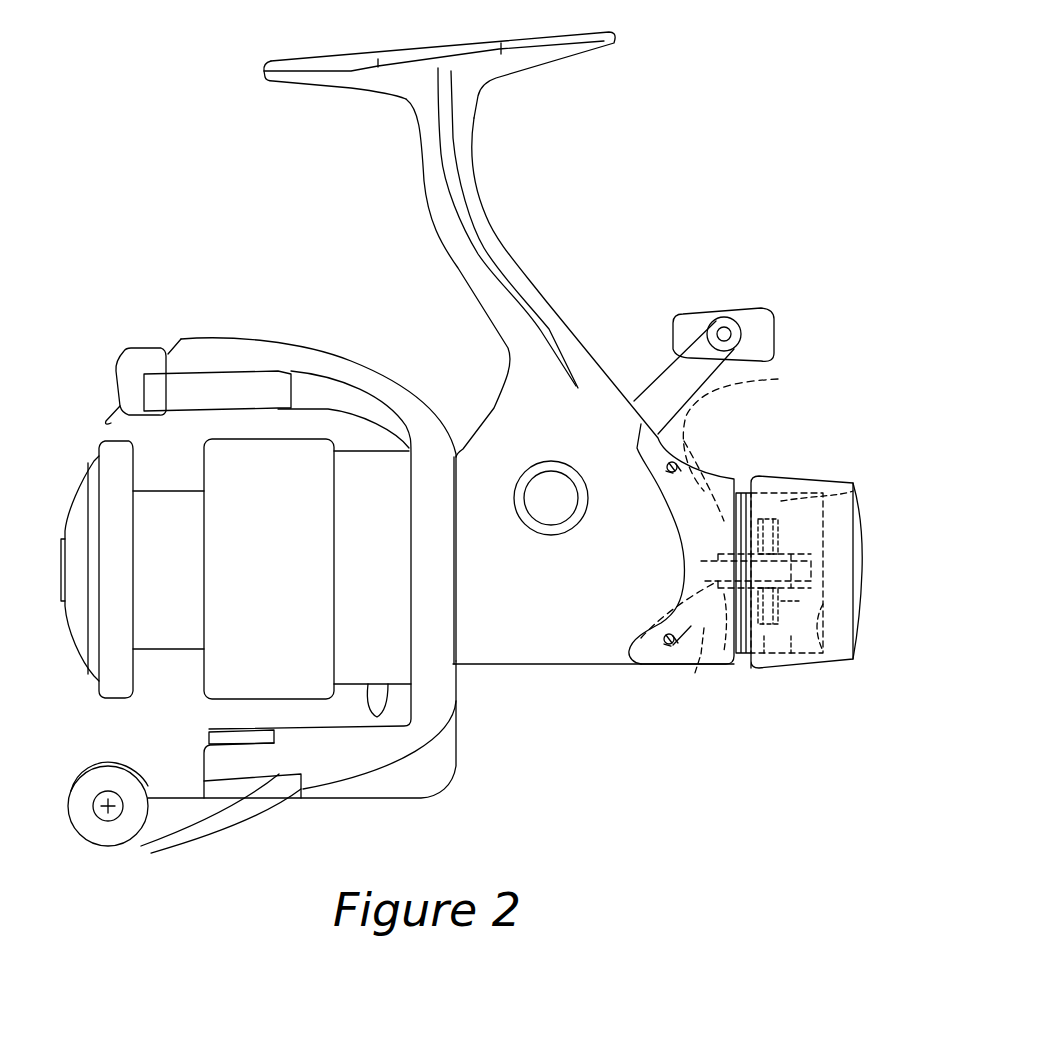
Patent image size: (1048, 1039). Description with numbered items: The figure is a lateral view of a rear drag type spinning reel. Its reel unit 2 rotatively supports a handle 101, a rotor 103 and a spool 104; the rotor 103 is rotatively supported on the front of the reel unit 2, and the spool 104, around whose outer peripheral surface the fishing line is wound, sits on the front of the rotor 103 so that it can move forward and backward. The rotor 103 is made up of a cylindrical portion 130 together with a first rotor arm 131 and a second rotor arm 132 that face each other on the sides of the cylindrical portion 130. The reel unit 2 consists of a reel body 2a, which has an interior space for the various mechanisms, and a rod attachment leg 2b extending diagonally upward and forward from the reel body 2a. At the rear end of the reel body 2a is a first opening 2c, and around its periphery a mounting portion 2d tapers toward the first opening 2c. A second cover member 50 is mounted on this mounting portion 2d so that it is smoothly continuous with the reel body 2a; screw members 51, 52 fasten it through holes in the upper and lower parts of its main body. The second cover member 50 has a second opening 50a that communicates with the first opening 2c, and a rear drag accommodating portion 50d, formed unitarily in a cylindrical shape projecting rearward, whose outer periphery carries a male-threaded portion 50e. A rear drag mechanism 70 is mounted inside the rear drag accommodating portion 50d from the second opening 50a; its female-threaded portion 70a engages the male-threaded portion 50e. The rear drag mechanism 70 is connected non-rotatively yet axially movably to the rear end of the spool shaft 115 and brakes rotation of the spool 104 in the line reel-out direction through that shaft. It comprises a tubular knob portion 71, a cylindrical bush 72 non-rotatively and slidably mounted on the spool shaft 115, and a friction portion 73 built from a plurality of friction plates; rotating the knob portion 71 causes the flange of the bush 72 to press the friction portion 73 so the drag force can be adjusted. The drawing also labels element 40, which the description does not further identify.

The reel unit 2 is at (520, 197).
The reel body 2a is at (588, 373).
The rod attachment leg 2b is at (467, 150).
The first opening 2c is at (711, 665).
The mounting portion 2d is at (698, 495).
The drag mechanism 40 is at (712, 522).
The second cover member 50 is at (705, 645).
The second opening 50a is at (838, 660).
The rear drag accommodating portion 50d is at (855, 567).
The male-threaded portion 50e is at (810, 660).
The screw member 51 is at (740, 380).
The screw member 52 is at (672, 657).
The rear drag mechanism 70 is at (790, 666).
The female-threaded portion 70a is at (750, 650).
The knob portion 71 is at (847, 587).
The bush 72 is at (800, 553).
The friction portion 73 is at (790, 512).
The handle 101 is at (762, 313).
The rotor 103 is at (388, 388).
The spool 104 is at (283, 468).
The spool shaft 115 is at (785, 655).
The cylindrical portion 130 is at (368, 687).
The first rotor arm 131 is at (320, 355).
The second rotor arm 132 is at (314, 788).